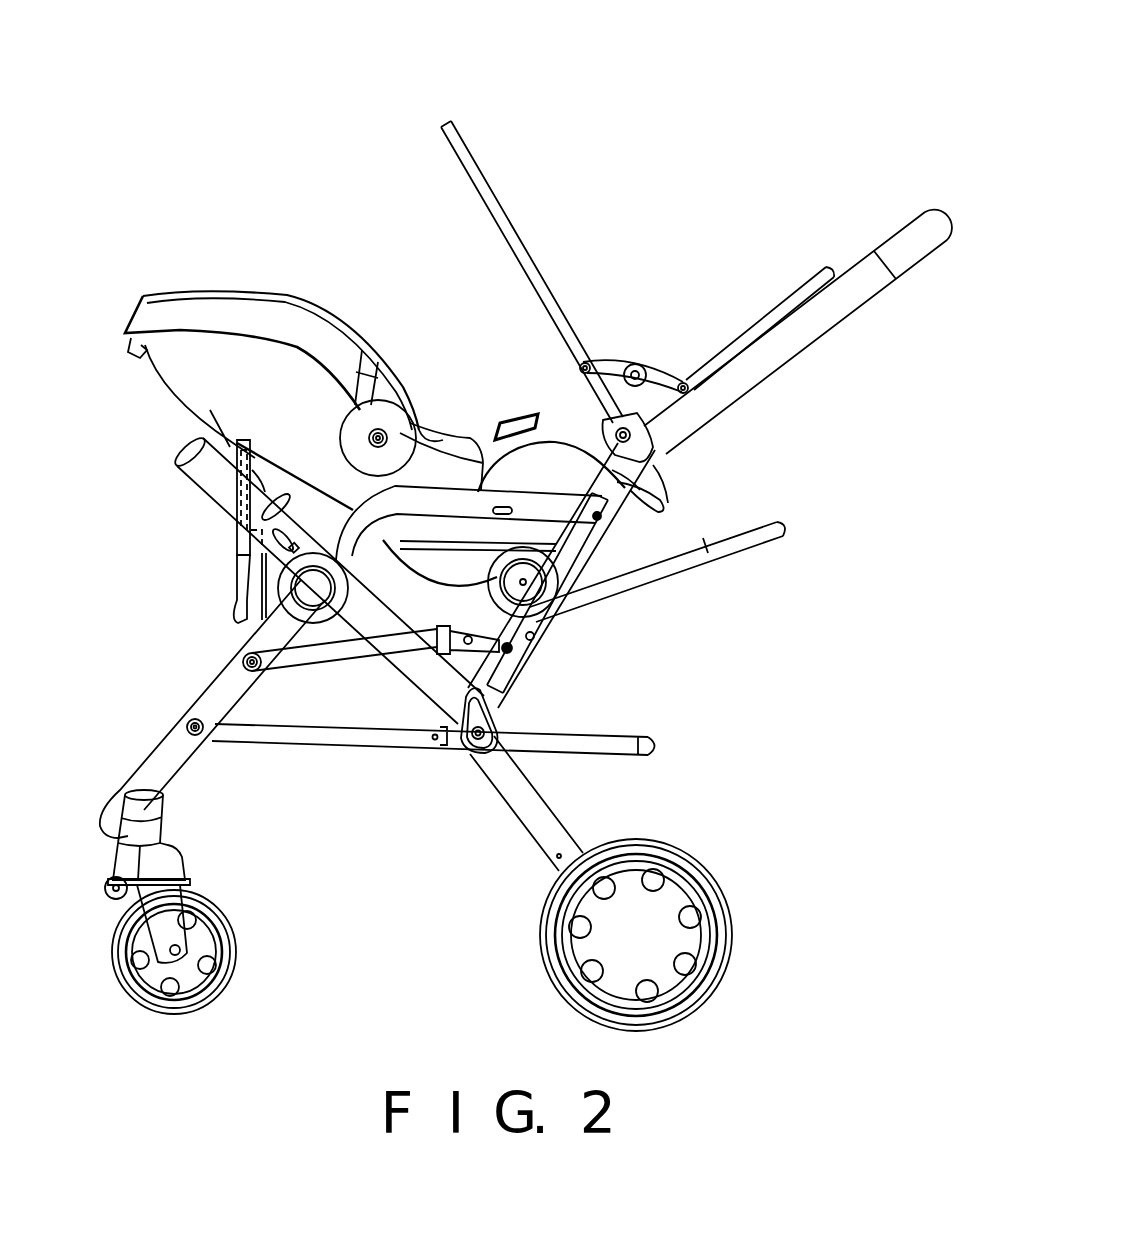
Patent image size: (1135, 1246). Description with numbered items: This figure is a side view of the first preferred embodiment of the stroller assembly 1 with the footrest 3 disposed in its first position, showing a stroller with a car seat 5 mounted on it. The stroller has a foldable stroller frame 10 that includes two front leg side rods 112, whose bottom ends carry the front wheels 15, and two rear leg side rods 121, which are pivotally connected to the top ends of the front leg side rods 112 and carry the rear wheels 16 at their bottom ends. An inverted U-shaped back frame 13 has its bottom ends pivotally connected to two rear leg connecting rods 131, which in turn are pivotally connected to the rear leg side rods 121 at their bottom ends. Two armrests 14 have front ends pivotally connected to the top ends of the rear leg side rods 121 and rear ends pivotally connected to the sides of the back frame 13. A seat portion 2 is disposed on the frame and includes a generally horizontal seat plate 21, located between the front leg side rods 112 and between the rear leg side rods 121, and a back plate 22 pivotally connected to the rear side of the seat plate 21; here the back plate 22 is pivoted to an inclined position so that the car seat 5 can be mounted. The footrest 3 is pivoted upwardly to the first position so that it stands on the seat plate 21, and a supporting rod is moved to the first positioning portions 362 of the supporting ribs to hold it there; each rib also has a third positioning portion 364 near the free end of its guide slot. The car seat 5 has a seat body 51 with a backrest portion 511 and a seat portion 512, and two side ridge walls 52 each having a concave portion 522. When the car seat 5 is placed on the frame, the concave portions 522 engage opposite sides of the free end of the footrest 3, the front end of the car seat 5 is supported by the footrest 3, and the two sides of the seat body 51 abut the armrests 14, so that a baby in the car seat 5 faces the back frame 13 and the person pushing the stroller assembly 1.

The stroller assembly 1 is at (766, 172).
The foldable stroller frame 10 is at (855, 203).
The front leg side rods 112 is at (152, 757).
The rear leg side rods 121 is at (532, 820).
The back frame 13 is at (840, 300).
The rear leg connecting rods 131 is at (505, 668).
The armrests 14 is at (445, 505).
The front wheels 15 is at (223, 968).
The rear wheels 16 is at (717, 887).
The seat portion 2 is at (816, 533).
The seat plate 21 is at (320, 648).
The back plate 22 is at (687, 573).
The footrest 3 is at (212, 577).
The first positioning portion 362 is at (243, 600).
The third positioning portion 364 is at (240, 521).
The car seat 5 is at (207, 253).
The seat body 51 is at (137, 317).
The backrest portion 511 is at (180, 357).
The seat portion 512 is at (573, 470).
The side ridge walls 52 is at (253, 460).
The concave portion 522 is at (280, 493).